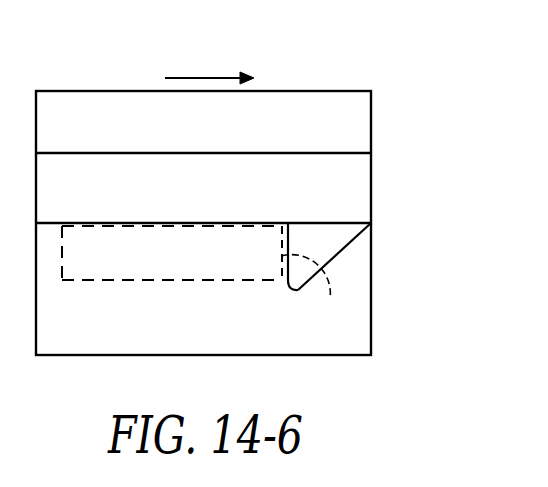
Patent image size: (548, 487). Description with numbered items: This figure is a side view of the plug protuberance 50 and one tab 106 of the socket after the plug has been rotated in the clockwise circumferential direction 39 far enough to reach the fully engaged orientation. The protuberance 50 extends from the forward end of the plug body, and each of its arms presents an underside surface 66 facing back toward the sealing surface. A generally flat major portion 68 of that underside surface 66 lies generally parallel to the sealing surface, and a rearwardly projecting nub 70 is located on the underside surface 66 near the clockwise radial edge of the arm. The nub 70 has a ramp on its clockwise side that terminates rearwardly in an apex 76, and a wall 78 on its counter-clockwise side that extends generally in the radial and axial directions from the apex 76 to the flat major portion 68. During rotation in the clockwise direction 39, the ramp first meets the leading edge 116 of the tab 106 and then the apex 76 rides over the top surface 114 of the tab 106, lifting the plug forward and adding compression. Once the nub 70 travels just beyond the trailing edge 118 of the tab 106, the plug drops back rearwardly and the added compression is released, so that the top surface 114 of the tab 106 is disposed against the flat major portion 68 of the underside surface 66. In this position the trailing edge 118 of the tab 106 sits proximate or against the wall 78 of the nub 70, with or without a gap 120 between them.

The clockwise circumferential direction 39 is at (200, 77).
The protuberance 50 is at (150, 121).
The underside surface 66 is at (203, 279).
The major portion 68 is at (182, 225).
The nub 70 is at (317, 248).
The apex 76 is at (297, 293).
The wall 78 is at (288, 243).
The tab 106 is at (193, 240).
The top surface 114 is at (147, 222).
The leading edge 116 is at (62, 272).
The trailing edge 118 is at (314, 293).
The gap 120 is at (283, 281).